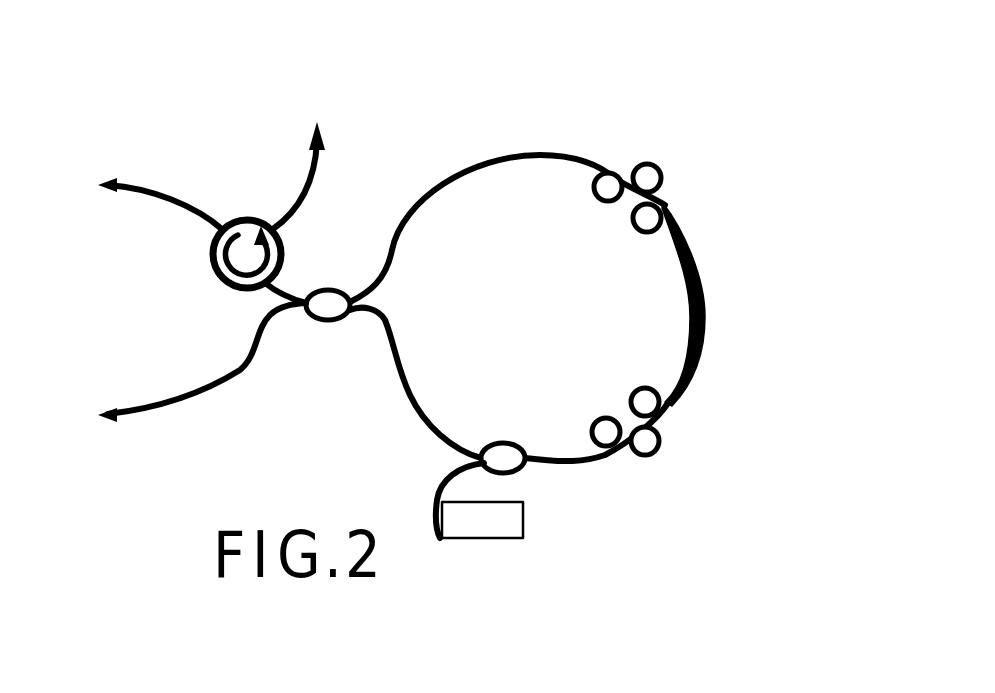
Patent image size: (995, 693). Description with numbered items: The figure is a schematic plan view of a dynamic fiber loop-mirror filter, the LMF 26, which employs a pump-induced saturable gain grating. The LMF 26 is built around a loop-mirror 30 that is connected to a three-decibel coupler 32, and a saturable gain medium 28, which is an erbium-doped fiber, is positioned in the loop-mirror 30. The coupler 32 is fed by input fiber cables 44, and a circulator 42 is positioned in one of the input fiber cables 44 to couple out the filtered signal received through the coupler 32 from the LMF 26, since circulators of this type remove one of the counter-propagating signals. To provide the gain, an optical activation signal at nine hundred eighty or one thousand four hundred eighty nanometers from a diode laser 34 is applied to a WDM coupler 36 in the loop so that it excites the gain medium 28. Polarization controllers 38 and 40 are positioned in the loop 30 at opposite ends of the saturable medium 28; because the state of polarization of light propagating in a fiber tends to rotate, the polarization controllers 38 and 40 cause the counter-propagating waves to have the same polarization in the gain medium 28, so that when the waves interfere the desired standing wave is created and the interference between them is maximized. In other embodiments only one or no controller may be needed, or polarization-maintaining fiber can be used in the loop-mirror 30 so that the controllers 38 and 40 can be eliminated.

The loop-mirror filter 26 is at (541, 78).
The saturable gain medium 28 is at (706, 320).
The loop-mirror 30 is at (452, 166).
The 3 dB coupler 32 is at (328, 322).
The diode laser 34 is at (523, 521).
The WDM coupler 36 is at (517, 442).
The polarization controller 38 is at (660, 170).
The polarization controller 40 is at (655, 455).
The circulator 42 is at (243, 218).
The input fiber cables 44 is at (177, 197).